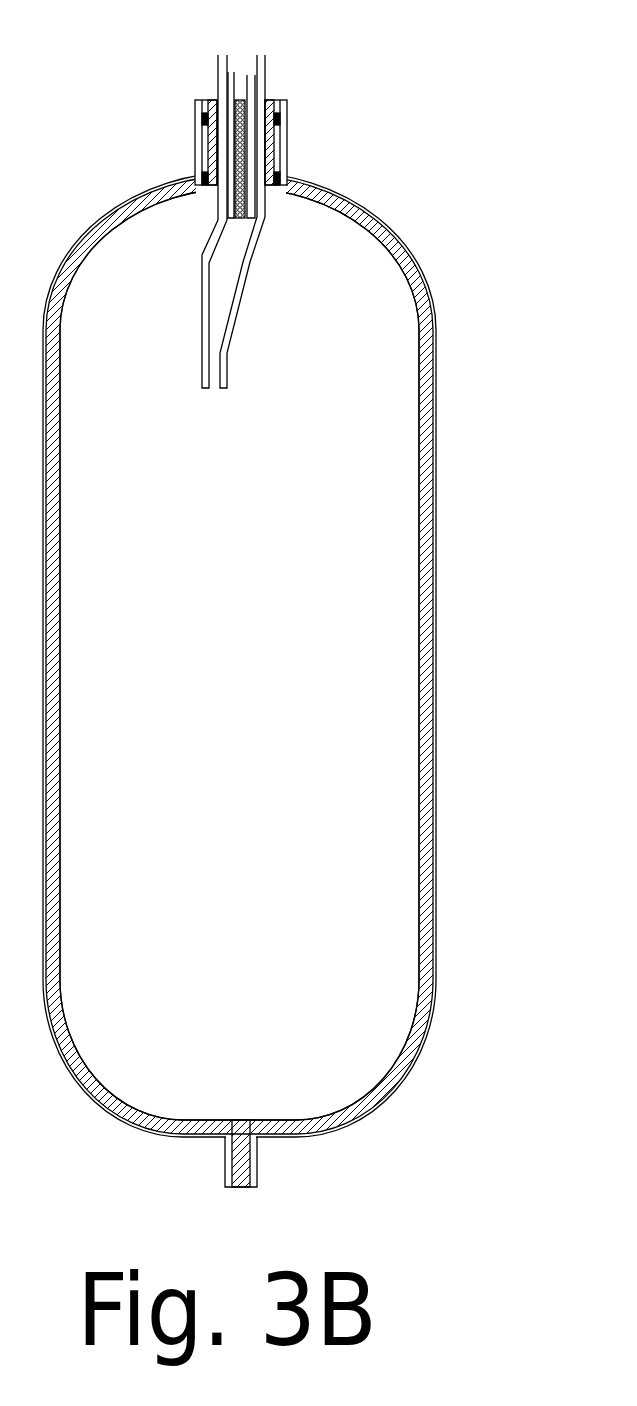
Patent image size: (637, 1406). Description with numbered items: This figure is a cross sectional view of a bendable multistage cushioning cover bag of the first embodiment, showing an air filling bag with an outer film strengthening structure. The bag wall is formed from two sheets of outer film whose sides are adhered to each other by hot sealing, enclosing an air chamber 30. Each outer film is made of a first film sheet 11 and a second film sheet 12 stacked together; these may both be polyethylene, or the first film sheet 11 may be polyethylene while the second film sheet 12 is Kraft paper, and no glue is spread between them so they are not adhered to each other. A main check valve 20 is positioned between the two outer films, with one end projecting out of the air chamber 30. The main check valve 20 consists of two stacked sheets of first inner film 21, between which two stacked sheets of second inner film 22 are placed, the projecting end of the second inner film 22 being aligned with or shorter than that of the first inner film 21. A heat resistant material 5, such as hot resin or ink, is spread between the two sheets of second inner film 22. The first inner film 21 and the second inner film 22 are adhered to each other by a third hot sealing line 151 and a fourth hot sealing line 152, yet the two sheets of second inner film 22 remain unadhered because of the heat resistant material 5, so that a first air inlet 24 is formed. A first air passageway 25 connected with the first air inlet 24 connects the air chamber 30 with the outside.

The heat resistant material 5 is at (233, 163).
The first film sheet 11 is at (436, 420).
The second film sheet 12 is at (432, 548).
The main check valve 20 is at (252, 389).
The first inner film 21 is at (218, 60).
The second inner film 22 is at (241, 94).
The first air inlet 24 is at (233, 77).
The first air passageway 25 is at (226, 282).
The air chamber 30 is at (408, 712).
The third hot sealing line 151 is at (268, 185).
The fourth hot sealing line 152 is at (268, 98).